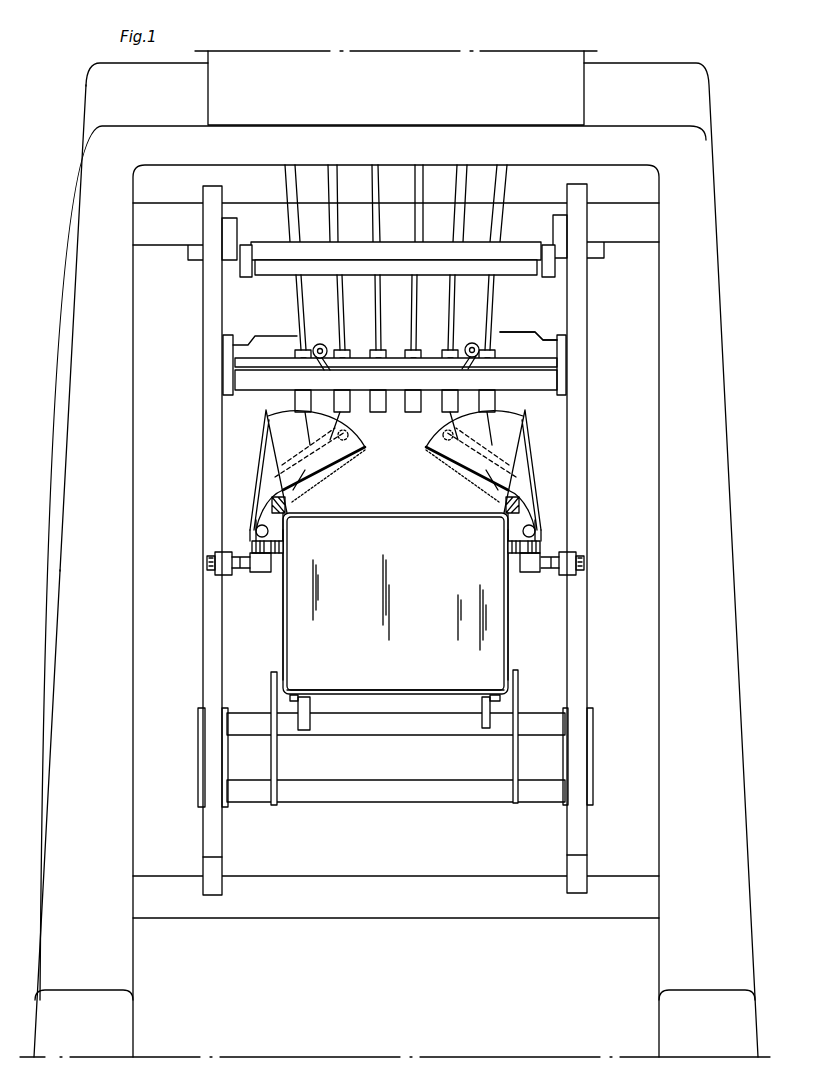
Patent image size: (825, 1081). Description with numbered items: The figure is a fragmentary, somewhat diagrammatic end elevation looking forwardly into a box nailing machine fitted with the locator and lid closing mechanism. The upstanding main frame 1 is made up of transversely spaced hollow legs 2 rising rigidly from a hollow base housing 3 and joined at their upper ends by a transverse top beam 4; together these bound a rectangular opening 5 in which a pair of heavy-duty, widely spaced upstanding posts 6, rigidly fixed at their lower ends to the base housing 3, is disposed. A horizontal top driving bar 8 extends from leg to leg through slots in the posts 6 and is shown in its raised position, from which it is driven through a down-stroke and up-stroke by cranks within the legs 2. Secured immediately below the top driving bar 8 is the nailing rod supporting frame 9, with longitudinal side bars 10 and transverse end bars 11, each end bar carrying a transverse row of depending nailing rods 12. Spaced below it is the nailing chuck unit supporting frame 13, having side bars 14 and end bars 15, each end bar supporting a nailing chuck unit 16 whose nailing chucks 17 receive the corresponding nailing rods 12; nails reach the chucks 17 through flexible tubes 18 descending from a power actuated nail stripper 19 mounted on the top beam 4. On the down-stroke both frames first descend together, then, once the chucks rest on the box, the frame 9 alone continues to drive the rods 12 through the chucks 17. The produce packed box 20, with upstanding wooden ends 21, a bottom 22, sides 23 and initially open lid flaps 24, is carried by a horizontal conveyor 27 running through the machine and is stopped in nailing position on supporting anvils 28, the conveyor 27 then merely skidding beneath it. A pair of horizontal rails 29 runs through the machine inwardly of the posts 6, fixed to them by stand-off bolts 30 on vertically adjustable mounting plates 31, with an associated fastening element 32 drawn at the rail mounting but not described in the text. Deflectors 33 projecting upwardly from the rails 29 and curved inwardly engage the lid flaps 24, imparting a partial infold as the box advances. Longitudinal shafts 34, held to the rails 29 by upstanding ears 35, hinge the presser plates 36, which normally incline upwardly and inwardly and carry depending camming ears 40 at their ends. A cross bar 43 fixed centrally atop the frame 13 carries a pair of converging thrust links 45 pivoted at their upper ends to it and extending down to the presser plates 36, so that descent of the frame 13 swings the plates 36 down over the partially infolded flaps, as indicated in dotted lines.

The main frame 1 is at (725, 246).
The hollow legs 2 is at (71, 595).
The base housing 3 is at (622, 952).
The top beam 4 is at (660, 76).
The rectangular opening 5 is at (148, 472).
The upstanding posts 6 is at (213, 648).
The top driving bar 8 is at (145, 230).
The nailing rod supporting frame 9 is at (510, 237).
The side bars 10 is at (240, 265).
The end bars 11 is at (297, 272).
The nailing rods 12 is at (490, 307).
The nailing chuck unit supporting frame 13 is at (249, 364).
The side bars 14 is at (233, 375).
The end bars 15 is at (237, 389).
The nailing chuck unit 16 is at (498, 402).
The nailing chucks 17 is at (396, 418).
The flexible tubes 18 is at (420, 180).
The nail stripper 19 is at (567, 96).
The box 20 is at (383, 512).
The ends 21 is at (480, 657).
The bottom 22 is at (413, 693).
The sides 23 is at (283, 630).
The lid flaps 24 is at (265, 437).
The conveyor 27 is at (475, 707).
The anvils 28 is at (297, 703).
The rails 29 is at (270, 572).
The stand-off bolts 30 is at (210, 565).
The mounting plates 31 is at (228, 572).
The knurled nuts 32 is at (283, 548).
The deflectors 33 is at (252, 485).
The longitudinal shafts 34 is at (245, 530).
The upstanding ears 35 is at (270, 534).
The presser plates 36 is at (272, 482).
The camming ears 40 is at (293, 503).
The cross bar 43 is at (513, 348).
The thrust links 45 is at (330, 400).